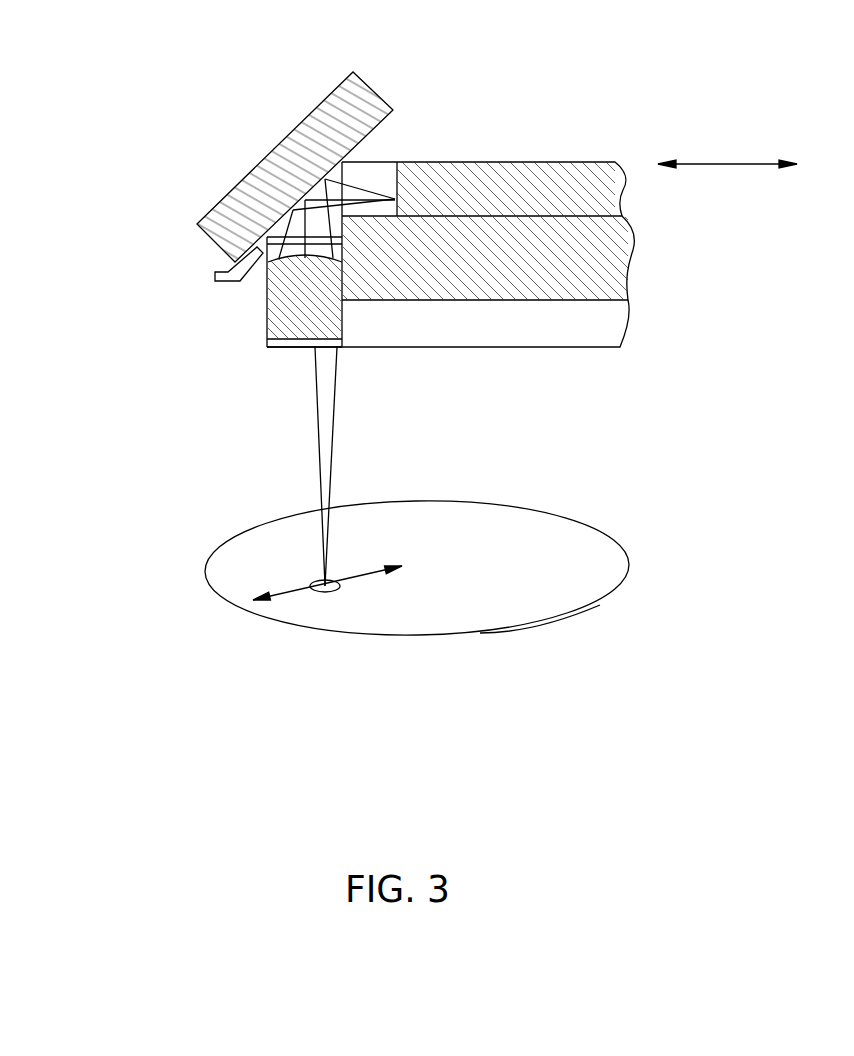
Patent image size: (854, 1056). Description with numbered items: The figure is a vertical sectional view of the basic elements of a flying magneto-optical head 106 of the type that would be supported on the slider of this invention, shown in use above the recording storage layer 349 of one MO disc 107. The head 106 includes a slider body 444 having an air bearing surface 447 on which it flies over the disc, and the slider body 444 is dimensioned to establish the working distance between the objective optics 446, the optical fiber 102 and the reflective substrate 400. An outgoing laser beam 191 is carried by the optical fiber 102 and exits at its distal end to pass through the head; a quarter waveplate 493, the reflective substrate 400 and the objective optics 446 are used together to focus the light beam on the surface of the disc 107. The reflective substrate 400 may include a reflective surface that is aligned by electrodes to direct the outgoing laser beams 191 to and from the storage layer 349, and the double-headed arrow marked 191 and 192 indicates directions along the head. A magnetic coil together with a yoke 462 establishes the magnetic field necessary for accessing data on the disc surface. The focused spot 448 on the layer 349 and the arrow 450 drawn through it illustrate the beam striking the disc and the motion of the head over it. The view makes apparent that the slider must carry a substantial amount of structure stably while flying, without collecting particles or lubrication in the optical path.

The flying MO head 106 is at (476, 38).
The optical fiber 102 is at (550, 162).
The quarter waveplate 493 is at (287, 143).
The reflective substrate 400 is at (216, 200).
The objective optics 446 is at (283, 330).
The yoke 462 is at (300, 343).
The outgoing laser beam 191 is at (675, 167).
The direction 192 is at (787, 167).
The slider body 444 is at (625, 285).
The air bearing surface 447 is at (553, 347).
The MO disc 107 is at (202, 565).
The recording storage layer 349 is at (563, 607).
The tracking direction arrow 450 is at (300, 590).
The focused spot 448 is at (340, 587).